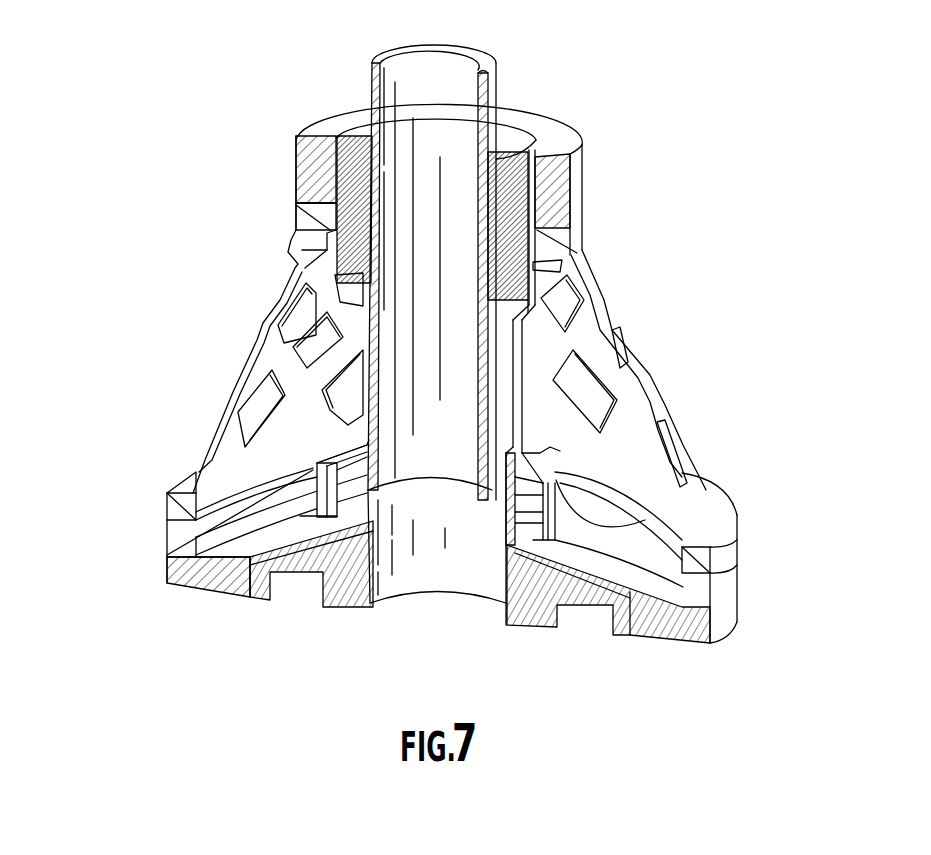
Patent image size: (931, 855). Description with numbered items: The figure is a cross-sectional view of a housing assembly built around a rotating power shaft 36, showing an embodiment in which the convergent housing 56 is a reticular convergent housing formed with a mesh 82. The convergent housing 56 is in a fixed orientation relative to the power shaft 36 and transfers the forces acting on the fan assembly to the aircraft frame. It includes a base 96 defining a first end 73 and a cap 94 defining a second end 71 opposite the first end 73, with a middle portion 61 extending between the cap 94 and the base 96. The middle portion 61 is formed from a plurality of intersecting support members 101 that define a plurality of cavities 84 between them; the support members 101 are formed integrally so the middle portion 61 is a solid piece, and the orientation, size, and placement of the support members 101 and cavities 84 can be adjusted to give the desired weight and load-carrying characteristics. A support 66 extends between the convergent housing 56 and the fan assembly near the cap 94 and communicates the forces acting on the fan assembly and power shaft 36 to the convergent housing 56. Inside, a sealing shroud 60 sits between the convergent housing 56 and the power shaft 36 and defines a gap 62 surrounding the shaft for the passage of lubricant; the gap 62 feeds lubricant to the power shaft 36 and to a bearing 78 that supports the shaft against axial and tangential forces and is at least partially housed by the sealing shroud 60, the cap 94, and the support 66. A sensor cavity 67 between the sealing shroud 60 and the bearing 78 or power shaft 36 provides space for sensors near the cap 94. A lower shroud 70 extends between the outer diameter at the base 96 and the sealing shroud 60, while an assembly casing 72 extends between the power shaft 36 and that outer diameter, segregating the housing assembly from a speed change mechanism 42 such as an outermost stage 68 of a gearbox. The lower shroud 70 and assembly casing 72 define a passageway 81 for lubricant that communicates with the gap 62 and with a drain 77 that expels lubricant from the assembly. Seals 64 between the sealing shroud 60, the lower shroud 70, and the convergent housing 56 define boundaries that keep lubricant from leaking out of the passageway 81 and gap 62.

The power shaft 36 is at (497, 70).
The speed change mechanism 42 is at (423, 636).
The convergent housing 56 is at (697, 356).
The sealing shroud 60 is at (363, 317).
The middle portion 61 is at (152, 331).
The gap 62 is at (366, 382).
The seal 64 is at (315, 465).
The support 66 is at (566, 133).
The sensor cavity 67 is at (563, 284).
The outermost stage 68 is at (340, 612).
The lower shroud 70 is at (683, 543).
The second end 71 is at (316, 190).
The assembly casing 72 is at (200, 597).
The first end 73 is at (145, 514).
The drain 77 is at (737, 603).
The bearing 78 is at (528, 215).
The passageway 81 is at (668, 598).
The mesh 82 is at (720, 396).
The cavity 84 is at (295, 303).
The cap 94 is at (295, 212).
The base 96 is at (737, 530).
The support member 101 is at (637, 360).